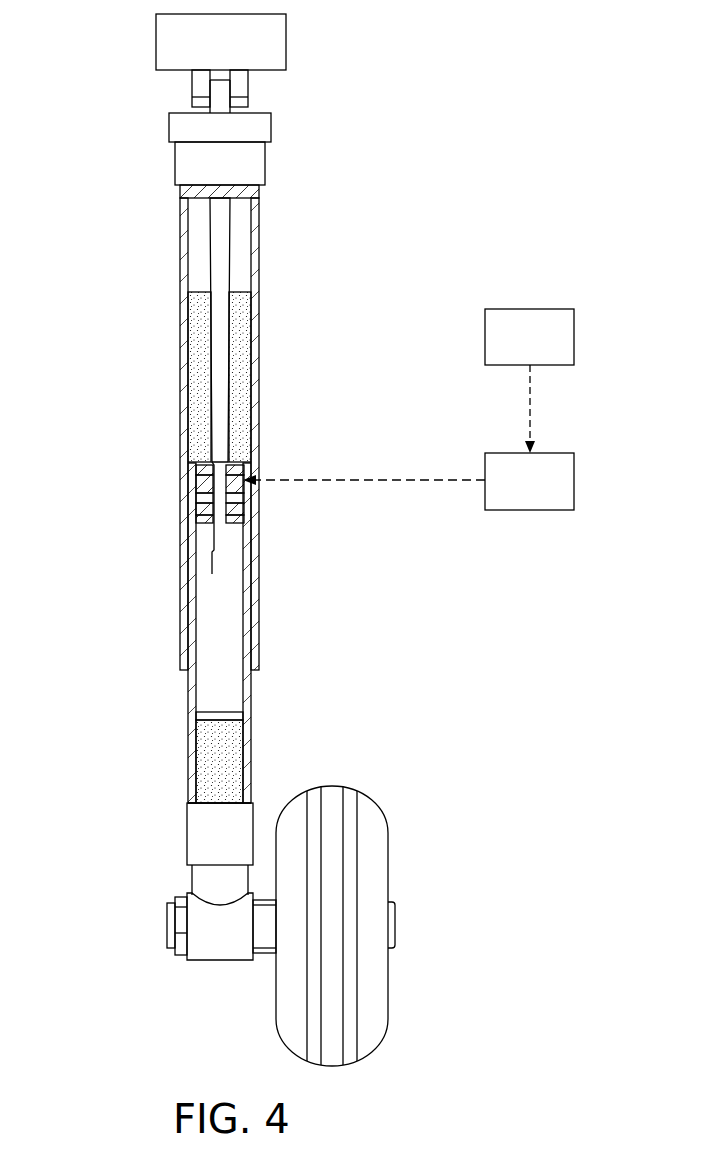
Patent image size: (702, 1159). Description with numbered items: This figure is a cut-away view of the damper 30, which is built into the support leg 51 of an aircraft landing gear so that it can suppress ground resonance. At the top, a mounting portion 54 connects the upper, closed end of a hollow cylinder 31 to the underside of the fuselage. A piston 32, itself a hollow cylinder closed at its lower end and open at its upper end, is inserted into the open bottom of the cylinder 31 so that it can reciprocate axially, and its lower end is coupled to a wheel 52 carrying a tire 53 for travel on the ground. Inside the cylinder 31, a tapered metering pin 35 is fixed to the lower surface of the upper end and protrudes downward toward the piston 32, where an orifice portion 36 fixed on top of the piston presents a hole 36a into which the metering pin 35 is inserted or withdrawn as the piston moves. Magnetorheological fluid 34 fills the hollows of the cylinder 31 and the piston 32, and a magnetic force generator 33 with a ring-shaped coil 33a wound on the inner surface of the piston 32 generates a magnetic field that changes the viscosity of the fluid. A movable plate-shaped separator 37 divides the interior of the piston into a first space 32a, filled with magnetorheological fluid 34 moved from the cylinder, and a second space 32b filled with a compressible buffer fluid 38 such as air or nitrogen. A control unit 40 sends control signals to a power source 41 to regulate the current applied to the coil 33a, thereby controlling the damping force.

The damper 30 is at (166, 326).
The support leg 51 is at (270, 494).
The mounting portion 54 is at (265, 160).
The cylinder 31 is at (259, 222).
The metering pin 35 is at (222, 273).
The magnetorheological fluid 34 is at (255, 360).
The piston 32 is at (252, 689).
The first space 32a is at (213, 628).
The second space 32b is at (215, 748).
The separator 37 is at (232, 718).
The buffer fluid 38 is at (215, 783).
The magnetic force generator 33 is at (376, 531).
The coil 33a is at (244, 509).
The orifice portion 36 is at (190, 512).
The hole 36a is at (240, 519).
The control unit 40 is at (529, 337).
The power source 41 is at (408, 437).
The wheel 52 is at (418, 922).
The tire 53 is at (372, 853).